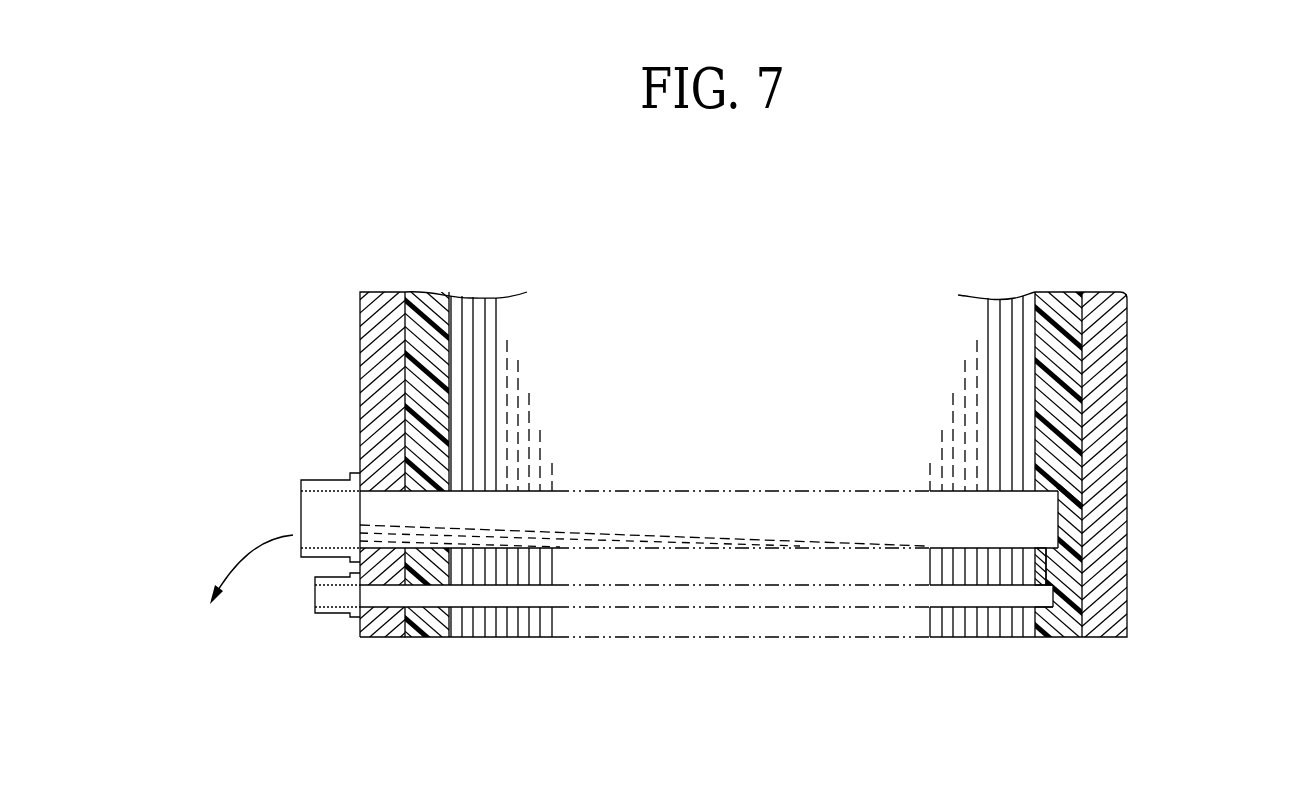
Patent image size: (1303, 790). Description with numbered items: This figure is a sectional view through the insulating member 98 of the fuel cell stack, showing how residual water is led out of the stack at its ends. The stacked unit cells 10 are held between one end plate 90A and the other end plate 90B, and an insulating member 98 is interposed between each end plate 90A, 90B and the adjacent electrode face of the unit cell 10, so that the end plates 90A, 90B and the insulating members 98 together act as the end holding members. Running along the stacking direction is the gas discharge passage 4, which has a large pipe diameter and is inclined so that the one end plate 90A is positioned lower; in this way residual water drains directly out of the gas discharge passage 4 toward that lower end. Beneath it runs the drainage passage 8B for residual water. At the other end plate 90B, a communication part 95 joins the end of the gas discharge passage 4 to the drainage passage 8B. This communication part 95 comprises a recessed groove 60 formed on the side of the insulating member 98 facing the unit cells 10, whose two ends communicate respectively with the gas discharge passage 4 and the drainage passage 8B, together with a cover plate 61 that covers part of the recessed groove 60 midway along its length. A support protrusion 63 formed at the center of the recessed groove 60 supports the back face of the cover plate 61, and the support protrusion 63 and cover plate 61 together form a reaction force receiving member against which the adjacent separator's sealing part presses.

The unit cell 10 is at (477, 295).
The insulating member 98 is at (413, 366).
The end plate 90A is at (368, 418).
The end plate 90B is at (1113, 350).
The gas discharge passage 4 is at (937, 492).
The drainage passage 8B is at (937, 607).
The support protrusion 63 is at (1050, 565).
The communication part 95 is at (1077, 512).
The cover plate 61 is at (1053, 573).
The recessed groove 60 is at (1050, 607).